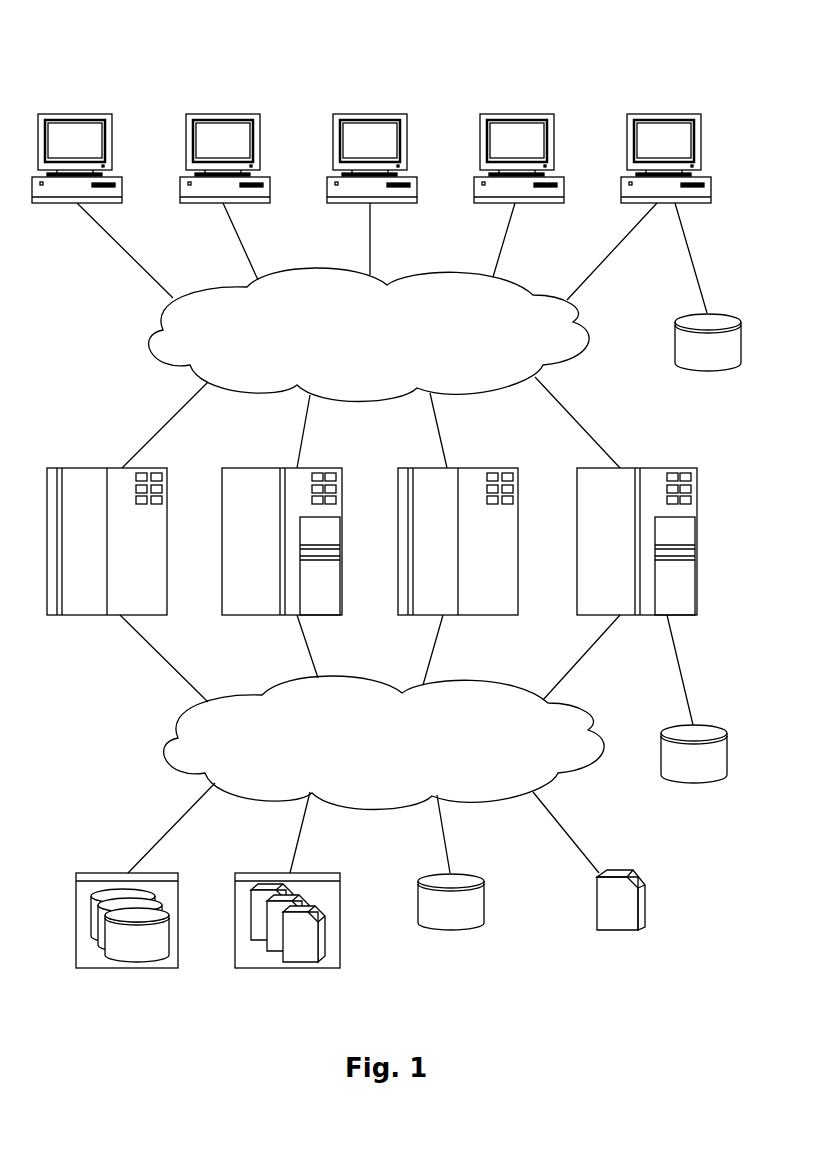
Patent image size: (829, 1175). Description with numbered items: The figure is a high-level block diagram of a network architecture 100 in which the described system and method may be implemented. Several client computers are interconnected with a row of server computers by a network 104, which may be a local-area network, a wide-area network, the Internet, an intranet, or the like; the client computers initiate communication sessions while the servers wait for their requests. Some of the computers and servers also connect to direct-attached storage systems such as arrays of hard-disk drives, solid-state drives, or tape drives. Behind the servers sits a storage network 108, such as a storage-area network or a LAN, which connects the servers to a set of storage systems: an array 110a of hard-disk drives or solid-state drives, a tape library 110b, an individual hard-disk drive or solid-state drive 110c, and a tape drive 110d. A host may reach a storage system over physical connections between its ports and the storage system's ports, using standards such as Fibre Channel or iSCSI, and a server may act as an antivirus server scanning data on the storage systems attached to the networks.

The network architecture 100 is at (138, 61).
The network 104 is at (354, 355).
The storage network 108 is at (369, 762).
The array of hard-disk drives or solid-state drives 110a is at (128, 970).
The tape library 110b is at (288, 970).
The individual hard-disk drive or solid-state drive 110c is at (448, 925).
The tape drive 110d is at (615, 932).